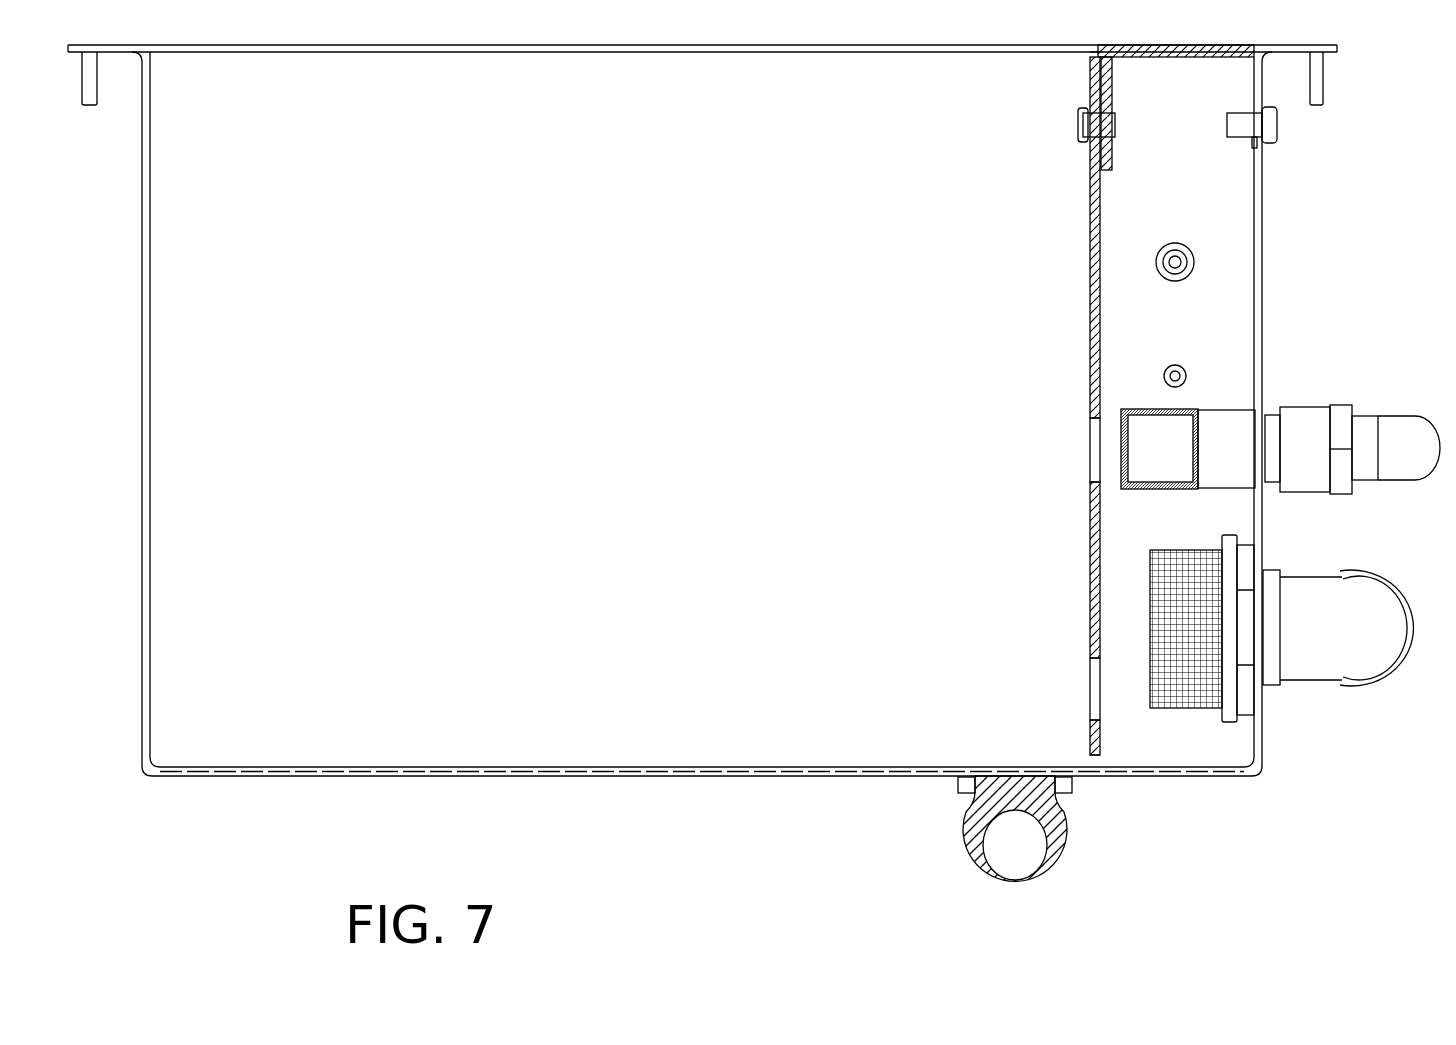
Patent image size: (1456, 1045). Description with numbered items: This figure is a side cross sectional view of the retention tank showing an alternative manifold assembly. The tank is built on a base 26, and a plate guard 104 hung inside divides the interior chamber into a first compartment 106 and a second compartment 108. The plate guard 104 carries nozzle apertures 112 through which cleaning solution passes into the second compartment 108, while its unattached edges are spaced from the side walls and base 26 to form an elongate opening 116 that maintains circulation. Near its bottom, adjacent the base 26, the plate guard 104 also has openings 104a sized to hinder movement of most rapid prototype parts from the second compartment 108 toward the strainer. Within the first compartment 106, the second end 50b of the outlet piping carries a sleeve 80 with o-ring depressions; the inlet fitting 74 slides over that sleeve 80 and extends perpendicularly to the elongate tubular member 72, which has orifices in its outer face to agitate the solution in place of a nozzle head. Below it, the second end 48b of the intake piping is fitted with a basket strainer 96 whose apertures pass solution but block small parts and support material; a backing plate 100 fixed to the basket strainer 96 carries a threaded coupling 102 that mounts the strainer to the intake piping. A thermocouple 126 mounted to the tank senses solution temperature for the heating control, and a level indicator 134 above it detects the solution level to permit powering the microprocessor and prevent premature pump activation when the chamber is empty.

The base 26 is at (630, 776).
The first compartment 106 is at (1187, 329).
The plate guard 104 is at (1088, 360).
The openings 104a is at (1088, 708).
The nozzle apertures 112 is at (1088, 450).
The elongate opening 116 is at (1092, 762).
The second compartment 108 is at (597, 412).
The level indicator 134 is at (1184, 246).
The thermocouple 126 is at (1167, 370).
The elongate tubular member 72 is at (1167, 408).
The inlet fitting 74 is at (1235, 410).
The sleeve 80 is at (1283, 406).
The second end of the outlet piping 50b is at (1327, 405).
The basket strainer 96 is at (1175, 708).
The backing plate 100 is at (1238, 717).
The threaded coupling 102 is at (1258, 693).
The second end of the intake piping 48b is at (1314, 576).